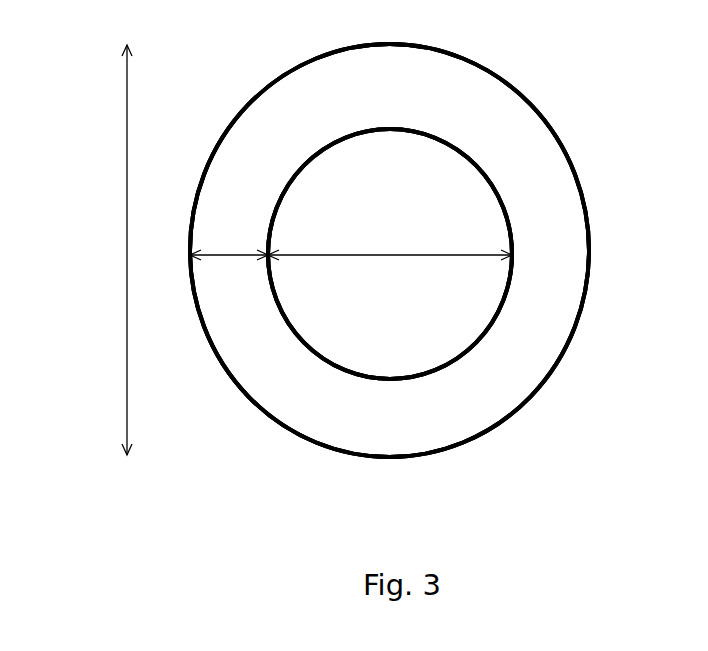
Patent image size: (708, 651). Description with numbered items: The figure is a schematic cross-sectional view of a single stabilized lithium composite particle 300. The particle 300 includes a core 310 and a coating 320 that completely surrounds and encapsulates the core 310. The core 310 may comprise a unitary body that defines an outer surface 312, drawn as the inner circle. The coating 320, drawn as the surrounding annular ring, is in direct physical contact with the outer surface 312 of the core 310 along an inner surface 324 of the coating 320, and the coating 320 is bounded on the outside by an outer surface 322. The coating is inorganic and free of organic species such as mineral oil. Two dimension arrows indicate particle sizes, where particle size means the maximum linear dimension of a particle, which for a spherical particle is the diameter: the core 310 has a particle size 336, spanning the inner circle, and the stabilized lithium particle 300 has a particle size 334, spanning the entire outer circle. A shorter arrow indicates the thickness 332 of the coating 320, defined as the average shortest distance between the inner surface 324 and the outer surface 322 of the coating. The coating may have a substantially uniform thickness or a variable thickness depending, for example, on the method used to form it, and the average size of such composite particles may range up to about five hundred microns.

The stabilized lithium composite particle 300 is at (586, 153).
The core 310 is at (417, 343).
The outer surface of the core 312 is at (383, 380).
The coating 320 is at (543, 371).
The outer surface of the coating 322 is at (502, 425).
The inner surface of the coating 324 is at (448, 148).
The coating thickness 332 is at (229, 238).
The particle size of the stabilized lithium particle 334 is at (87, 250).
The particle size of the core 336 is at (390, 236).